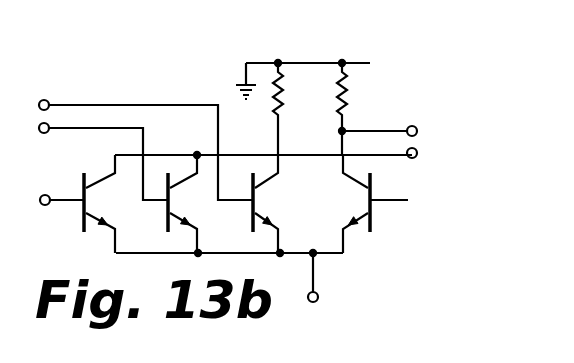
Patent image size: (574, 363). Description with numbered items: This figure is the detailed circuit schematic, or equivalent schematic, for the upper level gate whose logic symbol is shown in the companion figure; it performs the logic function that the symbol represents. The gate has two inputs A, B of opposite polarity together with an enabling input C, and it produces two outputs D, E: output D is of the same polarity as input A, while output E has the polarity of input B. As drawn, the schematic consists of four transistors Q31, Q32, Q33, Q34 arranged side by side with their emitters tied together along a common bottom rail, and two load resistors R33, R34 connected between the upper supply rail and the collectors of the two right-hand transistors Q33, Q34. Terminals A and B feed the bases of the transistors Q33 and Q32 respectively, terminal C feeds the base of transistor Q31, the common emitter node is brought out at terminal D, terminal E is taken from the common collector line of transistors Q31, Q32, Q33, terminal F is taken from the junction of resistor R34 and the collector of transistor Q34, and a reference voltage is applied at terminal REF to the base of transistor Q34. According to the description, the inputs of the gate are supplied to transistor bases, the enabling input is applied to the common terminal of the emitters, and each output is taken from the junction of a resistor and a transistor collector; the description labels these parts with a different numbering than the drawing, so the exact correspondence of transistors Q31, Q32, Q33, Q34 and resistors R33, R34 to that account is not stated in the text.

The transistor Q31 is at (106, 204).
The transistor Q32 is at (190, 204).
The transistor Q33 is at (275, 204).
The transistor Q34 is at (349, 204).
The resistor R33 is at (298, 109).
The resistor R34 is at (362, 109).
The input A is at (138, 147).
The input B is at (96, 159).
The enabling input C is at (55, 200).
The output D is at (321, 280).
The output E is at (419, 153).
The output terminal F is at (387, 131).
The reference voltage terminal REF is at (409, 200).